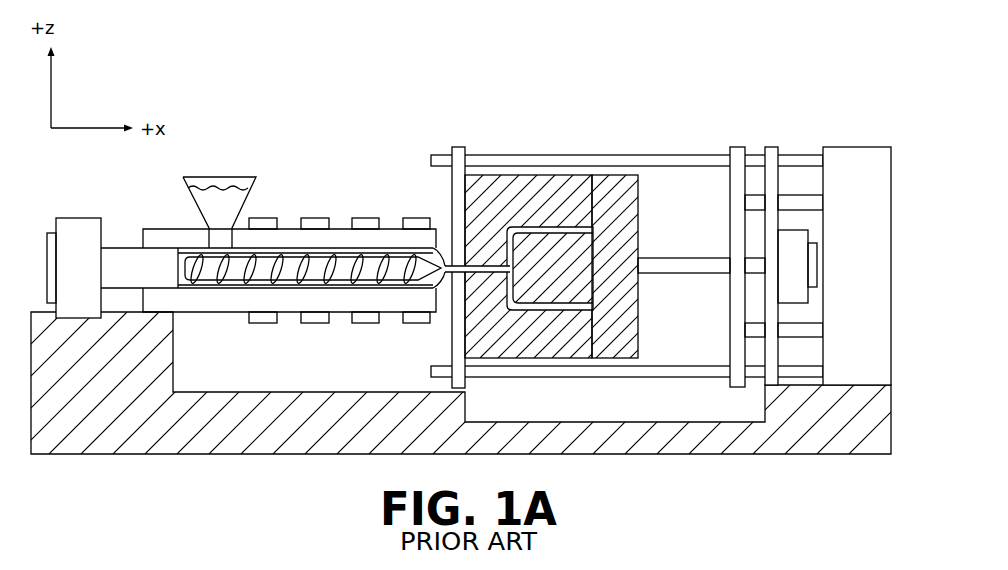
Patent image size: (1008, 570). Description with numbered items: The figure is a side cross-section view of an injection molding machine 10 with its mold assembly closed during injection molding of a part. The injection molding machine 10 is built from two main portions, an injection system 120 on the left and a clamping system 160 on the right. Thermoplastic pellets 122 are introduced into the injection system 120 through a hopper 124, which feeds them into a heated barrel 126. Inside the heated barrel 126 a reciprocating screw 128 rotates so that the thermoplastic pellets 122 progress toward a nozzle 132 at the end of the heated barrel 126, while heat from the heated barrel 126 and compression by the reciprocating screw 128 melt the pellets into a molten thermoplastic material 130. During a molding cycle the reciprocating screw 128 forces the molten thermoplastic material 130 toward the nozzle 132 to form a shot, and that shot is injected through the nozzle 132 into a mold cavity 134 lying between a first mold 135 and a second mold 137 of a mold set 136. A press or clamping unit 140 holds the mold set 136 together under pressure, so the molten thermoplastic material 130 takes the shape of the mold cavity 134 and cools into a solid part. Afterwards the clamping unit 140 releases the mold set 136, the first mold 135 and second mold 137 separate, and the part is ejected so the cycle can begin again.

The injection molding machine 10 is at (495, 229).
The injection system 120 is at (246, 197).
The thermoplastic pellets 122 is at (181, 182).
The hopper 124 is at (186, 183).
The heated barrel 126 is at (333, 210).
The reciprocating screw 128 is at (232, 272).
The molten thermoplastic material 130 is at (440, 248).
The nozzle 132 is at (461, 273).
The mold cavity 134 is at (514, 232).
The first mold 135 is at (513, 205).
The mold set 136 is at (580, 137).
The second mold 137 is at (606, 175).
The clamping unit 140 is at (809, 130).
The clamping system 160 is at (661, 215).